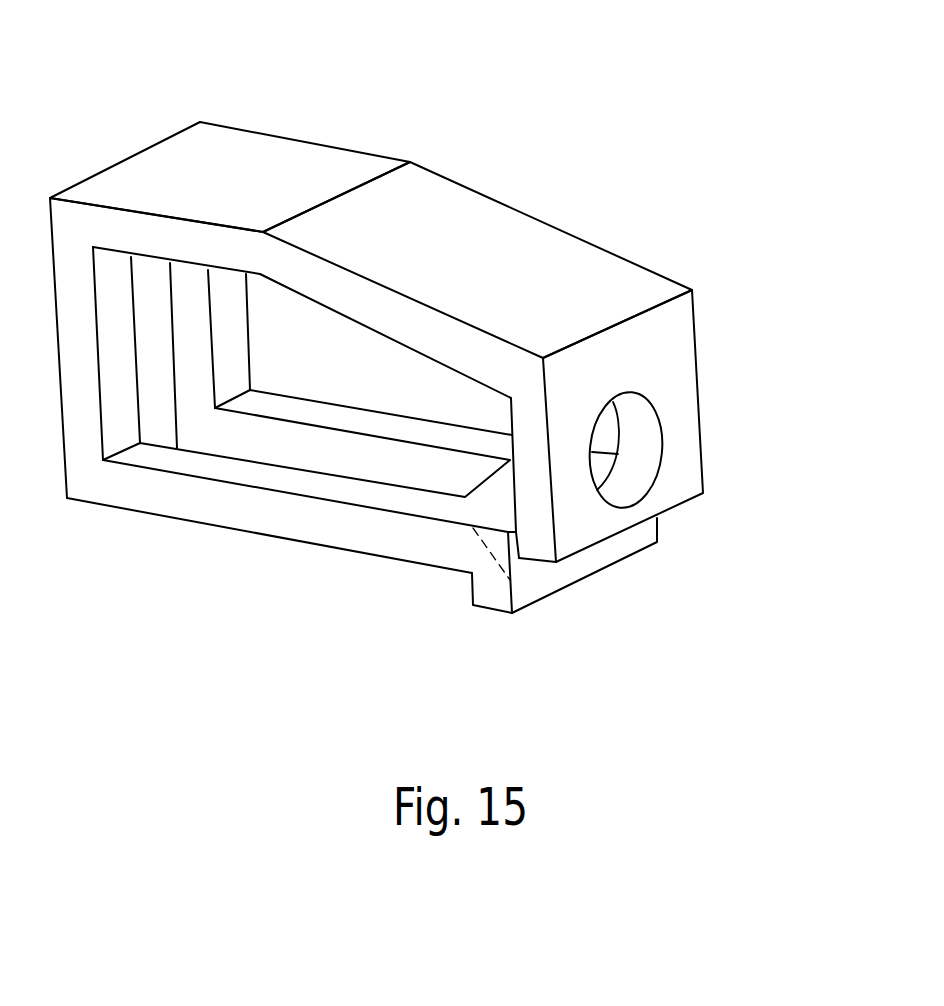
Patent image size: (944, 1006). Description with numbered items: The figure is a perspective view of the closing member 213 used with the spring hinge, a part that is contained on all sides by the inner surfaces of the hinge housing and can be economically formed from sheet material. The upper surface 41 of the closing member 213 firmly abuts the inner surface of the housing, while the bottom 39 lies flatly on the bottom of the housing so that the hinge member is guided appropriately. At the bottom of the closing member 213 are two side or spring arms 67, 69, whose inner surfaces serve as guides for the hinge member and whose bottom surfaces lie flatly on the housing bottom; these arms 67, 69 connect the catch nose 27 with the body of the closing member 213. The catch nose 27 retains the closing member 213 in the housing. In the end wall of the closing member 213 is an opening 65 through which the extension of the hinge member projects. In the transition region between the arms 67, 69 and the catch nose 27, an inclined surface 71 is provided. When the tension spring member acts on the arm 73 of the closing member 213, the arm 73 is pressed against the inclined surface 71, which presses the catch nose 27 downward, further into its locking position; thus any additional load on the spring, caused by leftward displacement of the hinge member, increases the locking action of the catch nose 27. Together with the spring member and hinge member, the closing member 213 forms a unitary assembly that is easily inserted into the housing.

The closing member 213 is at (112, 142).
The upper surface 41 is at (228, 186).
The side arm 69 is at (365, 423).
The opening 65 is at (642, 422).
The arm 73 is at (680, 478).
The inclined surface 71 is at (498, 556).
The catch nose 27 is at (487, 590).
The bottom 39 is at (250, 533).
The side arm 67 is at (148, 498).